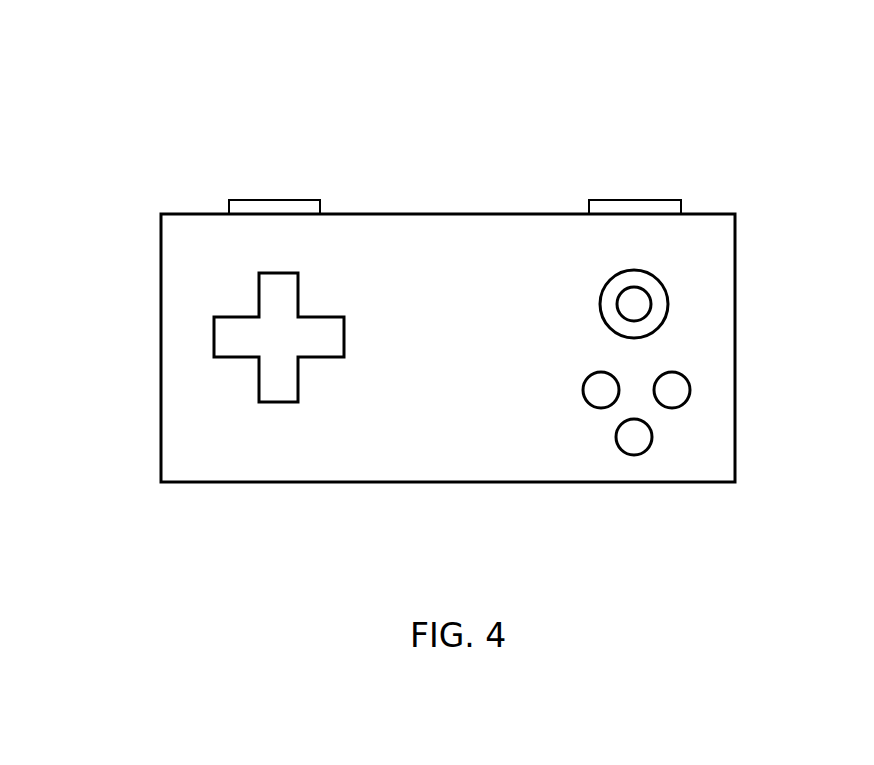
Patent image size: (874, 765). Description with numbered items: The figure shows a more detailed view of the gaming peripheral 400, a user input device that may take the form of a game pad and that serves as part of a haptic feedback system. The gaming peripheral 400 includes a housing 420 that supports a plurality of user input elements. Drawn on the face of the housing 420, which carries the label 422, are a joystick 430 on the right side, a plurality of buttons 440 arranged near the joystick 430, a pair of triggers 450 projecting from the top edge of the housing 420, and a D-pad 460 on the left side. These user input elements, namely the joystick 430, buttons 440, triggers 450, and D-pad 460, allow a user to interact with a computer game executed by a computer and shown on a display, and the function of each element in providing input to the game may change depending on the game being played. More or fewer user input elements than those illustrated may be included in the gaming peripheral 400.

The gaming peripheral 400 is at (103, 137).
The housing 420 is at (161, 245).
The front face 422 is at (483, 260).
The joystick 430 is at (668, 293).
The buttons 440 is at (620, 386).
The triggers 450 is at (298, 200).
The D-pad 460 is at (213, 335).